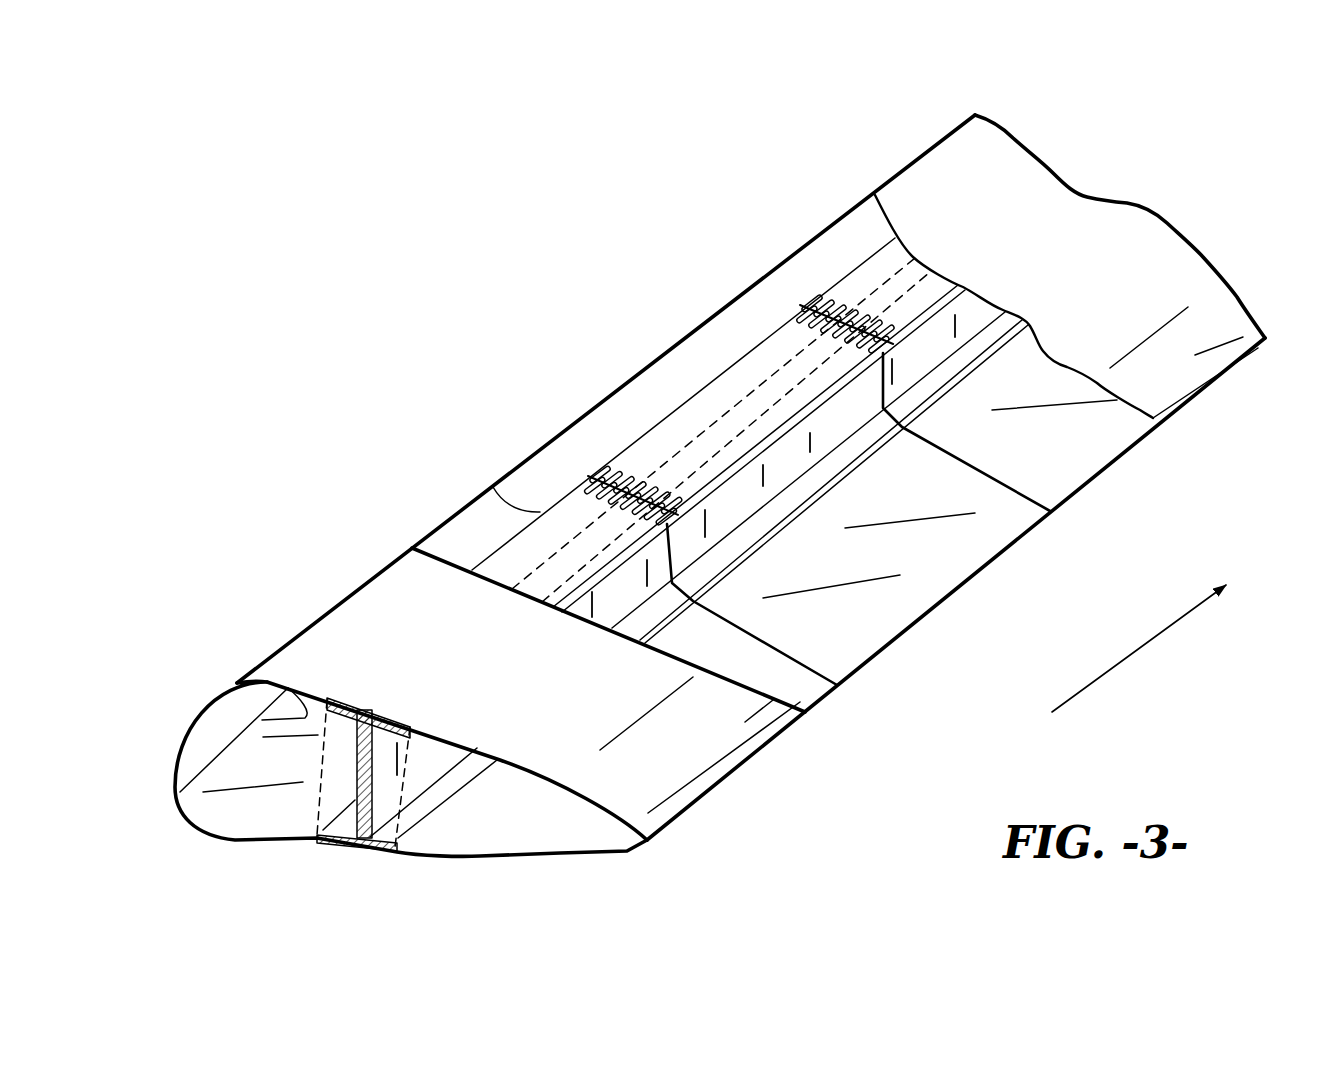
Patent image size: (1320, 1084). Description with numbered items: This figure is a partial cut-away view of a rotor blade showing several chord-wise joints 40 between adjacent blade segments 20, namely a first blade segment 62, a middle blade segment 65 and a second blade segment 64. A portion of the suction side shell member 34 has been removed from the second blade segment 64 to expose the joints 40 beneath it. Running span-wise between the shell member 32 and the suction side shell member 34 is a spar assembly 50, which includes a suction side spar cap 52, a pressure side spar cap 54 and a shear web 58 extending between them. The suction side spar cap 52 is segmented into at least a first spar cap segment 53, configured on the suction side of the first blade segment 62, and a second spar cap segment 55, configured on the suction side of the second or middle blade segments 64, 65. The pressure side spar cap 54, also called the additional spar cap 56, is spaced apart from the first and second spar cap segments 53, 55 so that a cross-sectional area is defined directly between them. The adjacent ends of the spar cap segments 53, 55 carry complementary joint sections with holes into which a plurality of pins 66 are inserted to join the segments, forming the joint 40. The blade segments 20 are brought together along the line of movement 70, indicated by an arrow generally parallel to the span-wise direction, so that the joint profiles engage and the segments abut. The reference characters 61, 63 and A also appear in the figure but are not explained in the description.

The blade segments 20 is at (916, 150).
The shell member 32 is at (912, 597).
The suction side shell member 34 is at (413, 600).
The chord-wise joint 40 is at (800, 290).
The spar assembly 50 is at (308, 760).
The suction side spar cap 52 is at (337, 690).
The first spar cap segment 53 is at (507, 560).
The pressure side spar cap 54 is at (378, 855).
The second spar cap segment 55 is at (712, 402).
The additional spar cap 56 is at (850, 455).
The shear web 58 is at (680, 552).
The joint 61 is at (410, 790).
The first blade segment 62 is at (832, 704).
The leading edge 63 is at (262, 720).
The second blade segment 64 is at (1114, 469).
The middle blade segment 65 is at (972, 587).
The pins 66 is at (809, 300).
The line of movement 70 is at (1140, 643).
The axis A is at (317, 800).